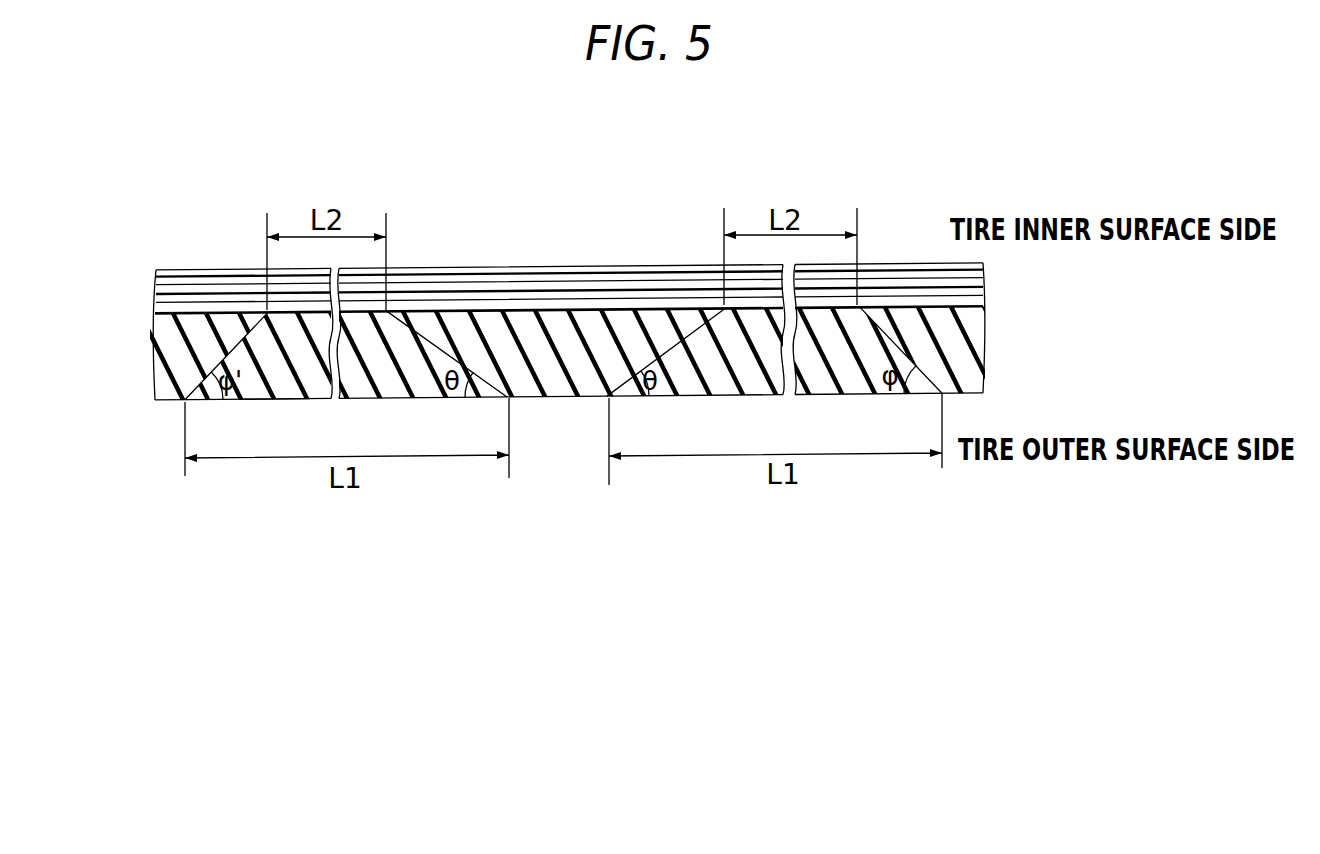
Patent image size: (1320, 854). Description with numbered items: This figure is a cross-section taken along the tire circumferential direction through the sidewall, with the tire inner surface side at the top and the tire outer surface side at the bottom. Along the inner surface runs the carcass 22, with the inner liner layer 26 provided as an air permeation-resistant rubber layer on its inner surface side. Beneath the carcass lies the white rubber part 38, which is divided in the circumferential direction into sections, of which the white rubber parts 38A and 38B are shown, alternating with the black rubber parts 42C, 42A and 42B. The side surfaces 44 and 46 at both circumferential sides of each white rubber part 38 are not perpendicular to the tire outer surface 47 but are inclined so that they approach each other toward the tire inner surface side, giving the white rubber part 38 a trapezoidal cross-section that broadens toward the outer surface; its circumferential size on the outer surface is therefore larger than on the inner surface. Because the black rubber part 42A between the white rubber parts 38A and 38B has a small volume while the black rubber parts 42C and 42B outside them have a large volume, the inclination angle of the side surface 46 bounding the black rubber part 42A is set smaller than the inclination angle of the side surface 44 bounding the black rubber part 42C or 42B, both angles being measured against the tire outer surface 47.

The carcass 22 is at (537, 283).
The inner liner layer 26 is at (493, 266).
The white rubber part 38 is at (717, 378).
The white rubber part 38A is at (371, 388).
The white rubber part 38B is at (830, 375).
The black rubber part 42A is at (554, 400).
The black rubber part 42B is at (975, 377).
The black rubber part 42C is at (163, 401).
The side surface 44 is at (230, 337).
The side surface 46 is at (438, 347).
The tire outer surface 47 is at (274, 401).